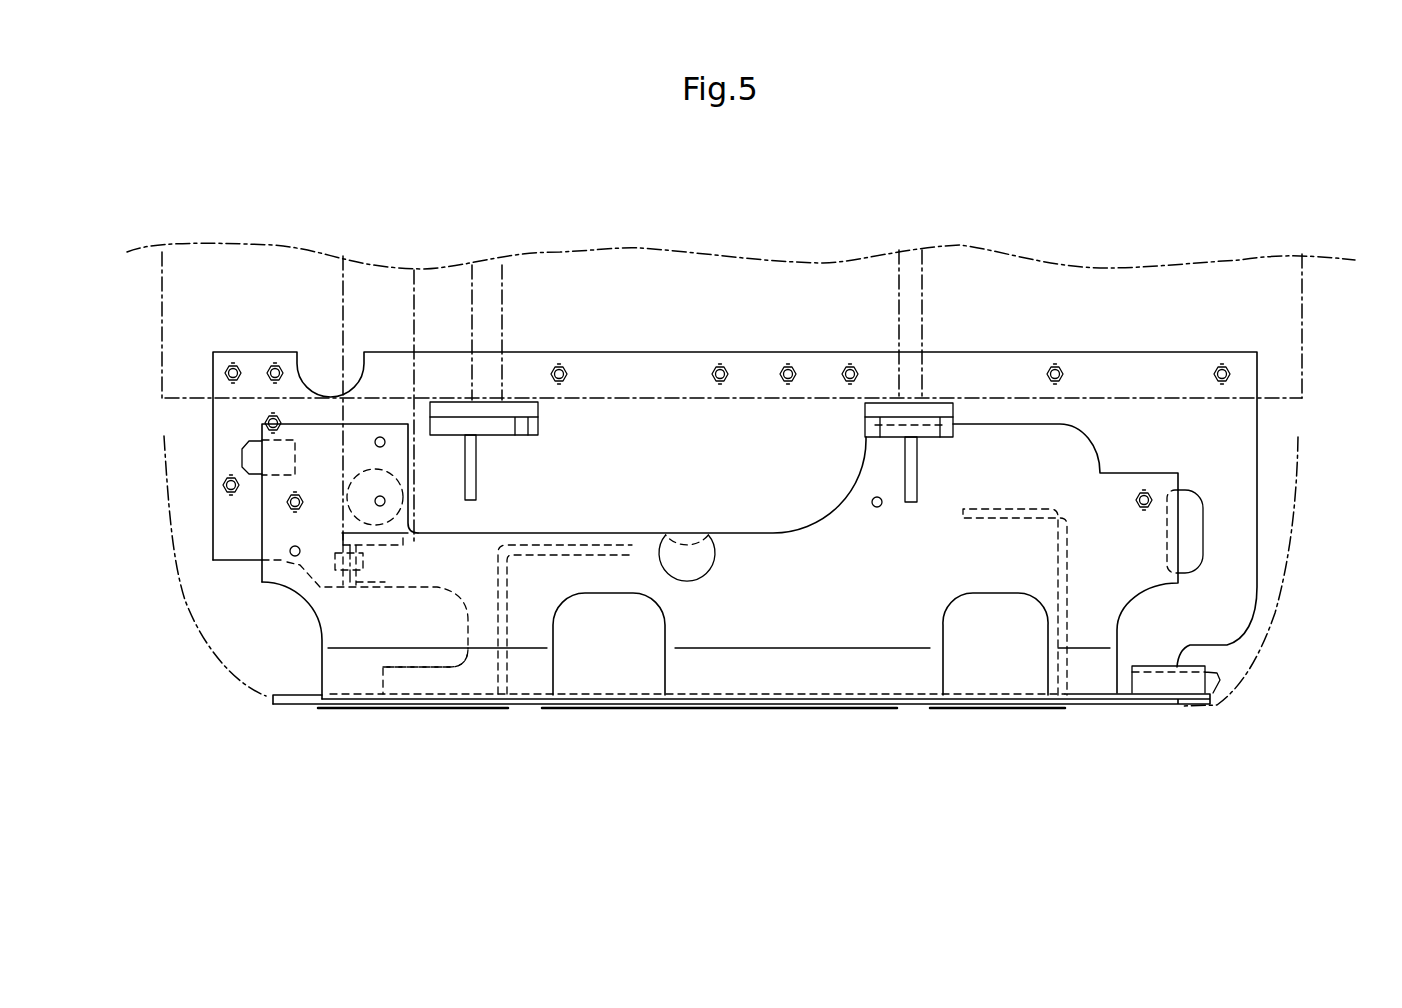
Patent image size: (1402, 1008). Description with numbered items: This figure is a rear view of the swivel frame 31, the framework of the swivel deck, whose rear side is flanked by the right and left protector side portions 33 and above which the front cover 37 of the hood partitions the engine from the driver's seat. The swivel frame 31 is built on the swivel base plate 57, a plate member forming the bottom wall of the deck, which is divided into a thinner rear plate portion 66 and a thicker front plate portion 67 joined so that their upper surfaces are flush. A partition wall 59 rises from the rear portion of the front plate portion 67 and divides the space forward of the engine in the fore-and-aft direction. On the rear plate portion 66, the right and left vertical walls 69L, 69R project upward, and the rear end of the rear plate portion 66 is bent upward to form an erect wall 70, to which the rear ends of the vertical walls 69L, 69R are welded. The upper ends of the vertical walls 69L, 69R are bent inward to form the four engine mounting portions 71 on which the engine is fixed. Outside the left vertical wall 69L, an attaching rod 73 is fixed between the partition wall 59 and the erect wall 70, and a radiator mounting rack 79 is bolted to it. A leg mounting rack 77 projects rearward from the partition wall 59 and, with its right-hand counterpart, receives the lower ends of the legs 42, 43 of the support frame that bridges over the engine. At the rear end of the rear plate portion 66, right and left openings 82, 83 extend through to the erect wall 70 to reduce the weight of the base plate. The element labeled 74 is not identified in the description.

The swivel frame 31 is at (823, 259).
The protector side portions 33 is at (168, 522).
The front cover 37 is at (1285, 310).
The leg 42 is at (472, 278).
The leg 43 is at (925, 280).
The swivel base plate 57 is at (408, 806).
The partition wall 59 is at (527, 351).
The rear plate portion 66 is at (382, 703).
The front plate portion 67 is at (300, 706).
The left vertical wall 69L is at (498, 645).
The right vertical wall 69R is at (1067, 632).
The erect wall 70 is at (766, 548).
The engine mounting portions 71 is at (580, 545).
The attaching rod 73 is at (350, 586).
The reference line 74 is at (343, 268).
The leg mounting rack 77 is at (452, 425).
The radiator mounting rack 79 is at (880, 404).
The opening 82 is at (664, 632).
The opening 83 is at (937, 668).